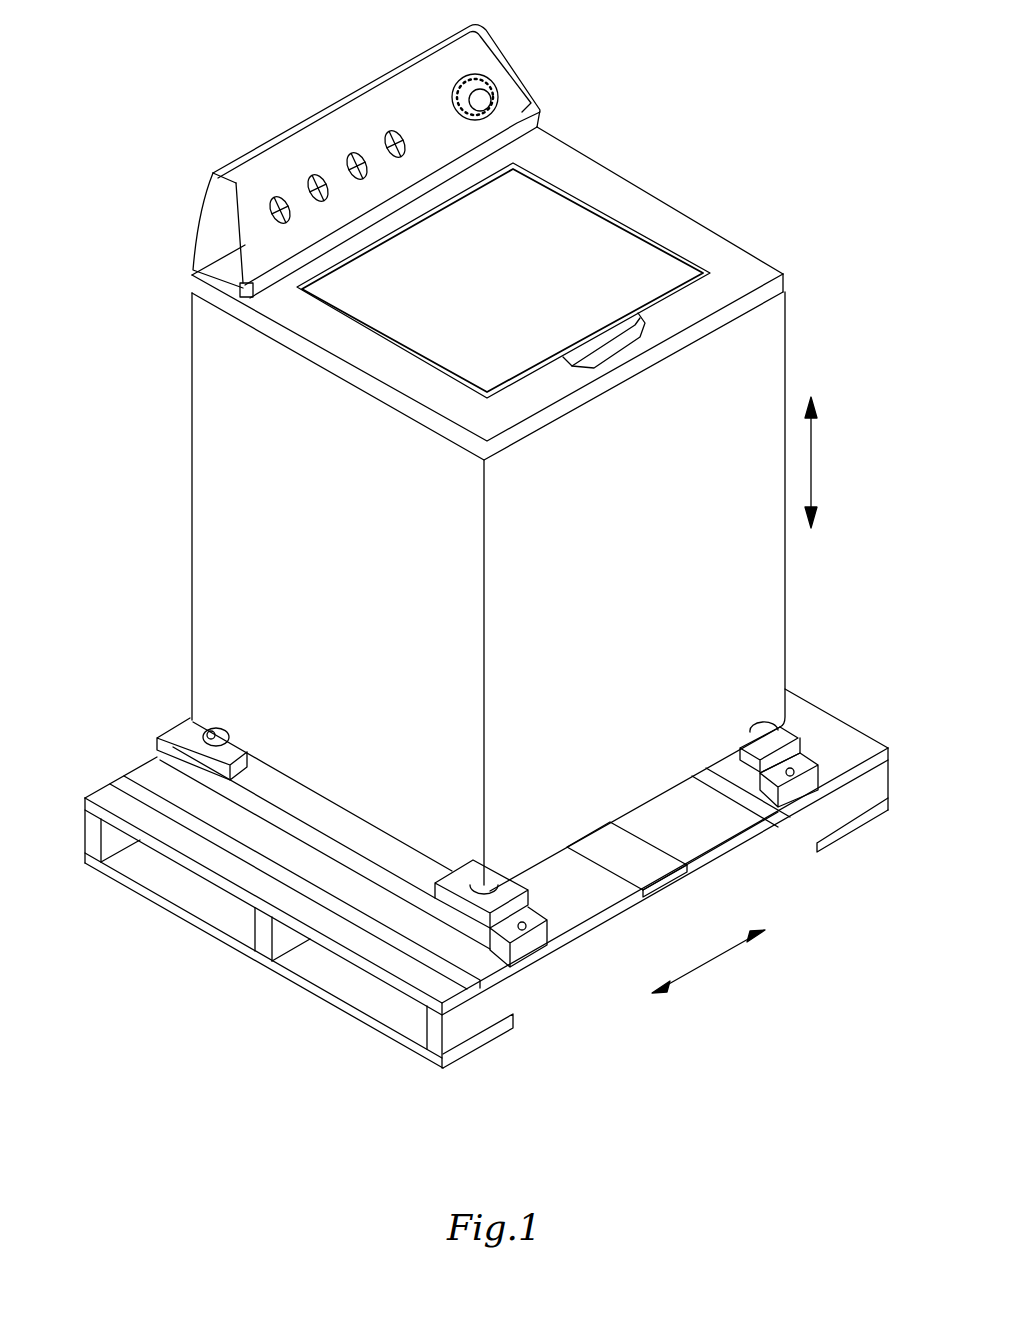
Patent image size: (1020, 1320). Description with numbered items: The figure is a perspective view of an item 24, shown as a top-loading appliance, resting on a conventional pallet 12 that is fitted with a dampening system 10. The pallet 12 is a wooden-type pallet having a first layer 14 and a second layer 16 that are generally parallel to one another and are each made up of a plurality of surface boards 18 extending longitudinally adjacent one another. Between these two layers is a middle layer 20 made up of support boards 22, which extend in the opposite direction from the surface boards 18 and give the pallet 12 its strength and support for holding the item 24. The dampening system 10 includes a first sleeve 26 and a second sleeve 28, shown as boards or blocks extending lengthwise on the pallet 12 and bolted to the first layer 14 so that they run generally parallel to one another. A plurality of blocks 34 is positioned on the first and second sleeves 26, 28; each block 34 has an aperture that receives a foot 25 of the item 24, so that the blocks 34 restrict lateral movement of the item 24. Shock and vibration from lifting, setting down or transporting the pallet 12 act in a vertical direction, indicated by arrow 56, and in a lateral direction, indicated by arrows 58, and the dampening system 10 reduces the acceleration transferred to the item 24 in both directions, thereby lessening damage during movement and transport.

The dampening system 10 is at (122, 686).
The pallet 12 is at (822, 703).
The first layer 14 is at (118, 793).
The second layer 16 is at (330, 1008).
The surface boards 18 is at (378, 1037).
The middle layer 20 is at (228, 905).
The support boards 22 is at (258, 928).
The item 24 is at (743, 260).
The foot 25 is at (188, 723).
The first sleeve 26 is at (805, 765).
The second sleeve 28 is at (530, 924).
The blocks 34 is at (188, 749).
The arrow indicating vertical direction 56 is at (813, 462).
The arrows indicating lateral direction 58 is at (707, 960).